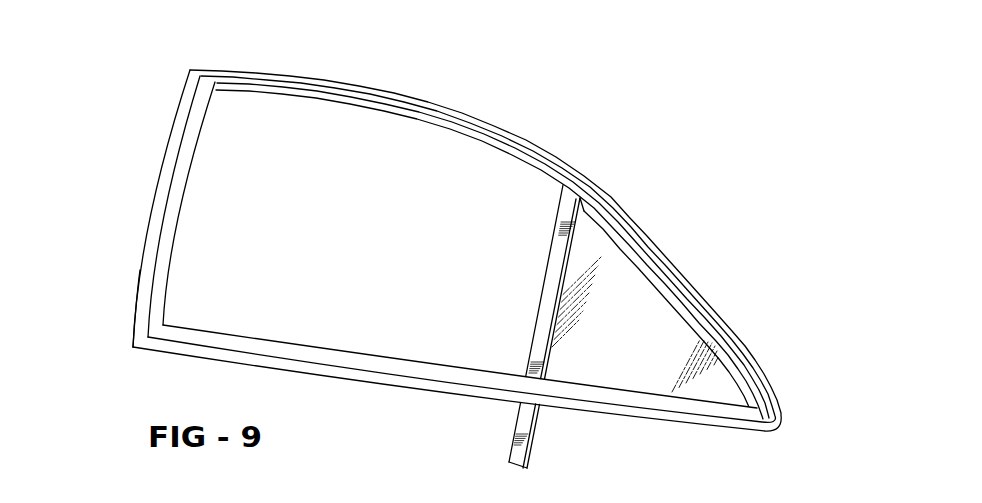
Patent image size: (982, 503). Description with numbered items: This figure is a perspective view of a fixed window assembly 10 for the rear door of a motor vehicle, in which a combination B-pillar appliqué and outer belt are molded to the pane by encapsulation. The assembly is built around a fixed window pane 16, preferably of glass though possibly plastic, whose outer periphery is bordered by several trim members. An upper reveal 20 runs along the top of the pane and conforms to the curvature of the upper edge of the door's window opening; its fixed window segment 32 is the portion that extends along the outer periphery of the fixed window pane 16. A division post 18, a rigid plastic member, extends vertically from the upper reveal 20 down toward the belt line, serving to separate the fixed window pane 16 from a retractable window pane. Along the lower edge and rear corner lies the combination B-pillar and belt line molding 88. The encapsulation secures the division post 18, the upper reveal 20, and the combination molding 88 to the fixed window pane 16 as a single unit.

The fixed window assembly 10 is at (745, 318).
The fixed window pane 16 is at (657, 342).
The division post 18 is at (548, 278).
The upper reveal 20 is at (483, 118).
The fixed window segment 32 is at (683, 285).
The combination B-pillar and belt line molding 88 is at (118, 362).